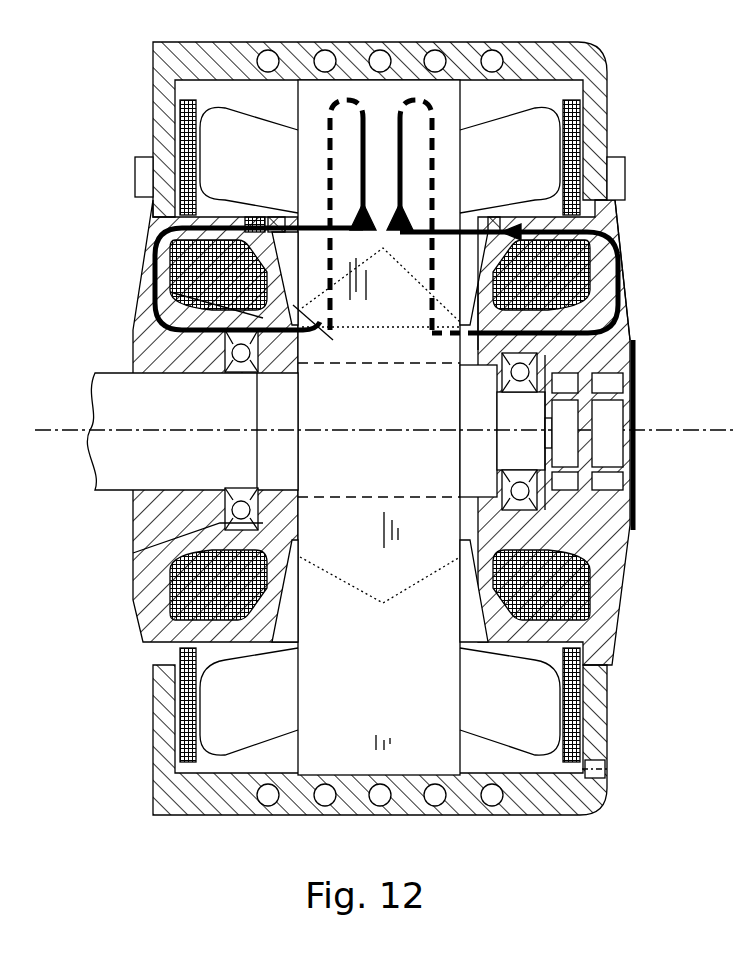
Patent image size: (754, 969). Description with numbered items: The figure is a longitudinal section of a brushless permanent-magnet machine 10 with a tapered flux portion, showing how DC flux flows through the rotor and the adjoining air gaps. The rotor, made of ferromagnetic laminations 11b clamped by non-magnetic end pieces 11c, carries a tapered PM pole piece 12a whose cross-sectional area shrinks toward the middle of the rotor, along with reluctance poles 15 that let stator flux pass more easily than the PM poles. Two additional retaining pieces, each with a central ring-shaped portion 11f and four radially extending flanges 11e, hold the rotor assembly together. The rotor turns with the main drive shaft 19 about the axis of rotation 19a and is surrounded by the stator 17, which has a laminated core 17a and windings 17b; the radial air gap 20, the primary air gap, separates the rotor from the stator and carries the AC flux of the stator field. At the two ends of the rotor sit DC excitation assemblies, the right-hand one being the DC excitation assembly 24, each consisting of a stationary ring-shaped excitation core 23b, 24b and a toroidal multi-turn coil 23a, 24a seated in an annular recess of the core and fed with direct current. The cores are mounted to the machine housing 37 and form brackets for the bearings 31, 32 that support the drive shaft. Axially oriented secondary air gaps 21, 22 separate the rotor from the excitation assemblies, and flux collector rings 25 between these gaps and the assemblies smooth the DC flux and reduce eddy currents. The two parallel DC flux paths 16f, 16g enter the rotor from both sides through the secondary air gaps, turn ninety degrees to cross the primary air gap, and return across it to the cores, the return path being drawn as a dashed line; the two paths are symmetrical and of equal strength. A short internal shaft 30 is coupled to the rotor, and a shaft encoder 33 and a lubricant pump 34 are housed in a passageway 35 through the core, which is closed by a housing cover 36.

The high strength undiffused machine 10 is at (650, 103).
The laminations 11b is at (393, 350).
The end pieces 11c is at (270, 220).
The radially extending flanges 11e is at (338, 331).
The central ring-shaped portion 11f is at (217, 338).
The PM pole 12a is at (392, 266).
The reluctance poles 15 is at (401, 304).
The DC flux path 16f is at (330, 130).
The DC flux path 16g is at (436, 136).
The stator 17 is at (386, 112).
The laminated core 17a is at (383, 717).
The windings 17b is at (263, 710).
The main drive shaft 19 is at (97, 383).
The axis of rotation 19a is at (58, 430).
The radial air gap 20 is at (440, 220).
The air gap 21 is at (262, 220).
The air gap 22 is at (494, 222).
The multi-turn coil 23a is at (173, 250).
The excitation core 23b is at (134, 313).
The DC excitation assembly 24 is at (640, 208).
The multi-turn coil 24a is at (592, 256).
The excitation core 24b is at (628, 310).
The flux collector rings 25 is at (548, 215).
The short internal shaft 30 is at (547, 438).
The bearing 31 is at (148, 520).
The bearing 32 is at (533, 505).
The shaft encoder 33 is at (567, 422).
The pump 34 is at (608, 422).
The passageway 35 is at (545, 477).
The housing cover 36 is at (638, 455).
The machine housing 37 is at (600, 782).